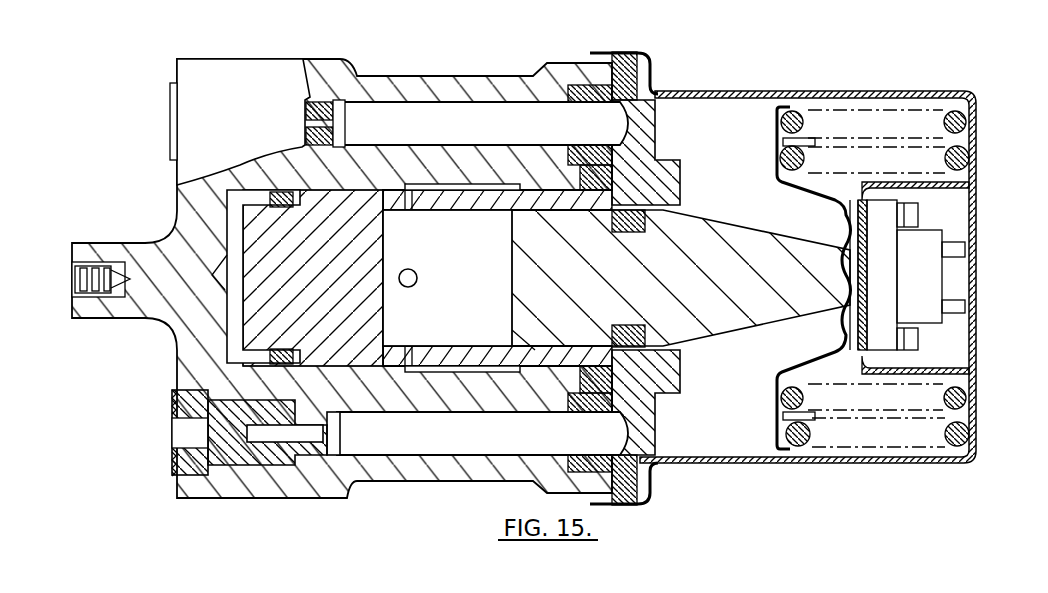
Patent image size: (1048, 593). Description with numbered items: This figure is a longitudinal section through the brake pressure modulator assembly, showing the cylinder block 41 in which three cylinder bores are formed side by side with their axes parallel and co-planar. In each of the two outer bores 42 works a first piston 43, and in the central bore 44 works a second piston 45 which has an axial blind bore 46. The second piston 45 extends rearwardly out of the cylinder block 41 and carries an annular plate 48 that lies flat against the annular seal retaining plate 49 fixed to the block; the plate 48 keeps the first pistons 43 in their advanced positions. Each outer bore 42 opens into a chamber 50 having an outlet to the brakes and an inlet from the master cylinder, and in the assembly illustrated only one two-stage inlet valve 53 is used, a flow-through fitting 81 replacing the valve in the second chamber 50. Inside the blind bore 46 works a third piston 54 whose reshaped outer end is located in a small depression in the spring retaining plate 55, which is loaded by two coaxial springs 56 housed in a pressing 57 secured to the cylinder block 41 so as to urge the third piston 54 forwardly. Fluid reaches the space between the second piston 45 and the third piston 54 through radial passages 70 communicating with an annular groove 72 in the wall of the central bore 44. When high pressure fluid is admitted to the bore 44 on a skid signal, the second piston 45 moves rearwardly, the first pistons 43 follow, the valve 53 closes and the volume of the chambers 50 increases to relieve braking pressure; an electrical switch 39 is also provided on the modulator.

The electrical switch 39 is at (923, 283).
The cylinder block 41 is at (293, 490).
The outer bore 42 is at (452, 102).
The first piston 43 is at (457, 132).
The central bore 44 is at (245, 373).
The second piston 45 is at (255, 214).
The blind bore 46 is at (468, 210).
The annular plate 48 is at (655, 141).
The seal retaining plate 49 is at (620, 70).
The chamber 50 is at (328, 452).
The two-stage valve 53 is at (345, 100).
The third piston 54 is at (735, 240).
The spring retaining plate 55 is at (780, 421).
The spring 56 is at (962, 400).
The pressing 57 is at (835, 462).
The radial passage 70 is at (408, 192).
The annular groove 72 is at (446, 191).
The flow-through fitting 81 is at (228, 452).